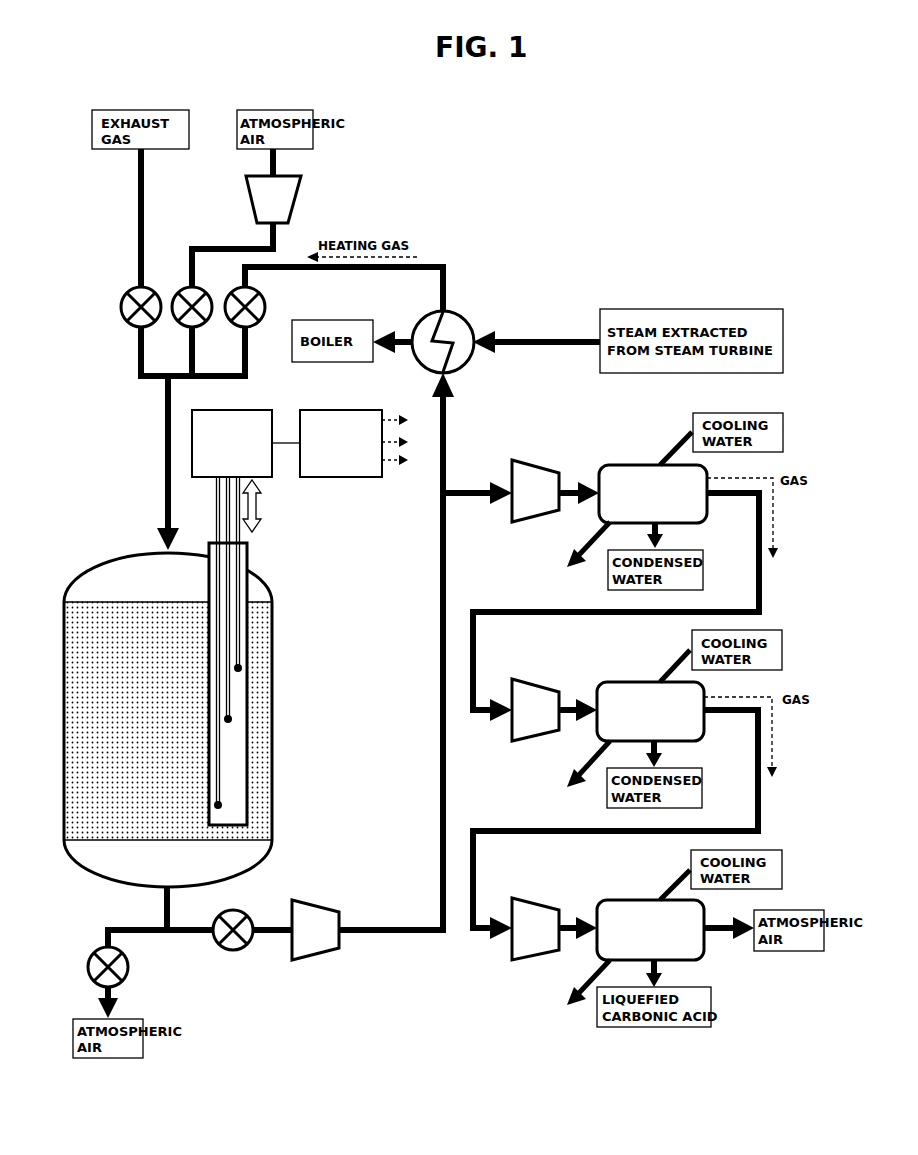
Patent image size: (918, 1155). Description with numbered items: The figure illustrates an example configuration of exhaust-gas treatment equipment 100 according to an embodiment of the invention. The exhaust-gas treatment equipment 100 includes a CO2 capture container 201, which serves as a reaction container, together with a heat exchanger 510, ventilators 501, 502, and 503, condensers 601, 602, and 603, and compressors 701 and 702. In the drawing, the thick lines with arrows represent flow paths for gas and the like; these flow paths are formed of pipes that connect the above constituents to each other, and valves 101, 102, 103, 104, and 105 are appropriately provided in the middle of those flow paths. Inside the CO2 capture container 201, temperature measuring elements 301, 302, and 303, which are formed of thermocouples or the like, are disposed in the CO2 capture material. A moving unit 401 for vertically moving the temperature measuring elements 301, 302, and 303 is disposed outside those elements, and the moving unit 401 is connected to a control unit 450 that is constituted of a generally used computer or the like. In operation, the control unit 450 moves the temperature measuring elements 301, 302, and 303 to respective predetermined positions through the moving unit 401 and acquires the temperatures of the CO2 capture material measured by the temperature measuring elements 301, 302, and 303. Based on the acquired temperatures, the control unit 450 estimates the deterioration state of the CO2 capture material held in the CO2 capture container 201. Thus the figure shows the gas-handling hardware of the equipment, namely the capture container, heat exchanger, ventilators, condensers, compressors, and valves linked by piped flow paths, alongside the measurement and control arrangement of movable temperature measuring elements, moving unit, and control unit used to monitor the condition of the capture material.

The exhaust-gas treatment equipment 100 is at (528, 225).
The valve 101 is at (128, 295).
The valve 102 is at (97, 953).
The valve 103 is at (180, 293).
The valve 104 is at (266, 307).
The valve 105 is at (226, 949).
The CO2 capture container 201 is at (108, 560).
The temperature measuring element 301 is at (242, 668).
The temperature measuring element 302 is at (232, 719).
The temperature measuring element 303 is at (222, 805).
The moving unit 401 is at (236, 410).
The control unit 450 is at (342, 410).
The ventilator 501 is at (301, 195).
The ventilator 502 is at (305, 901).
The ventilator 503 is at (534, 461).
The heat exchanger 510 is at (462, 319).
The condenser 601 is at (629, 465).
The condenser 602 is at (629, 682).
The condenser 603 is at (629, 900).
The compressor 701 is at (534, 680).
The compressor 702 is at (534, 898).